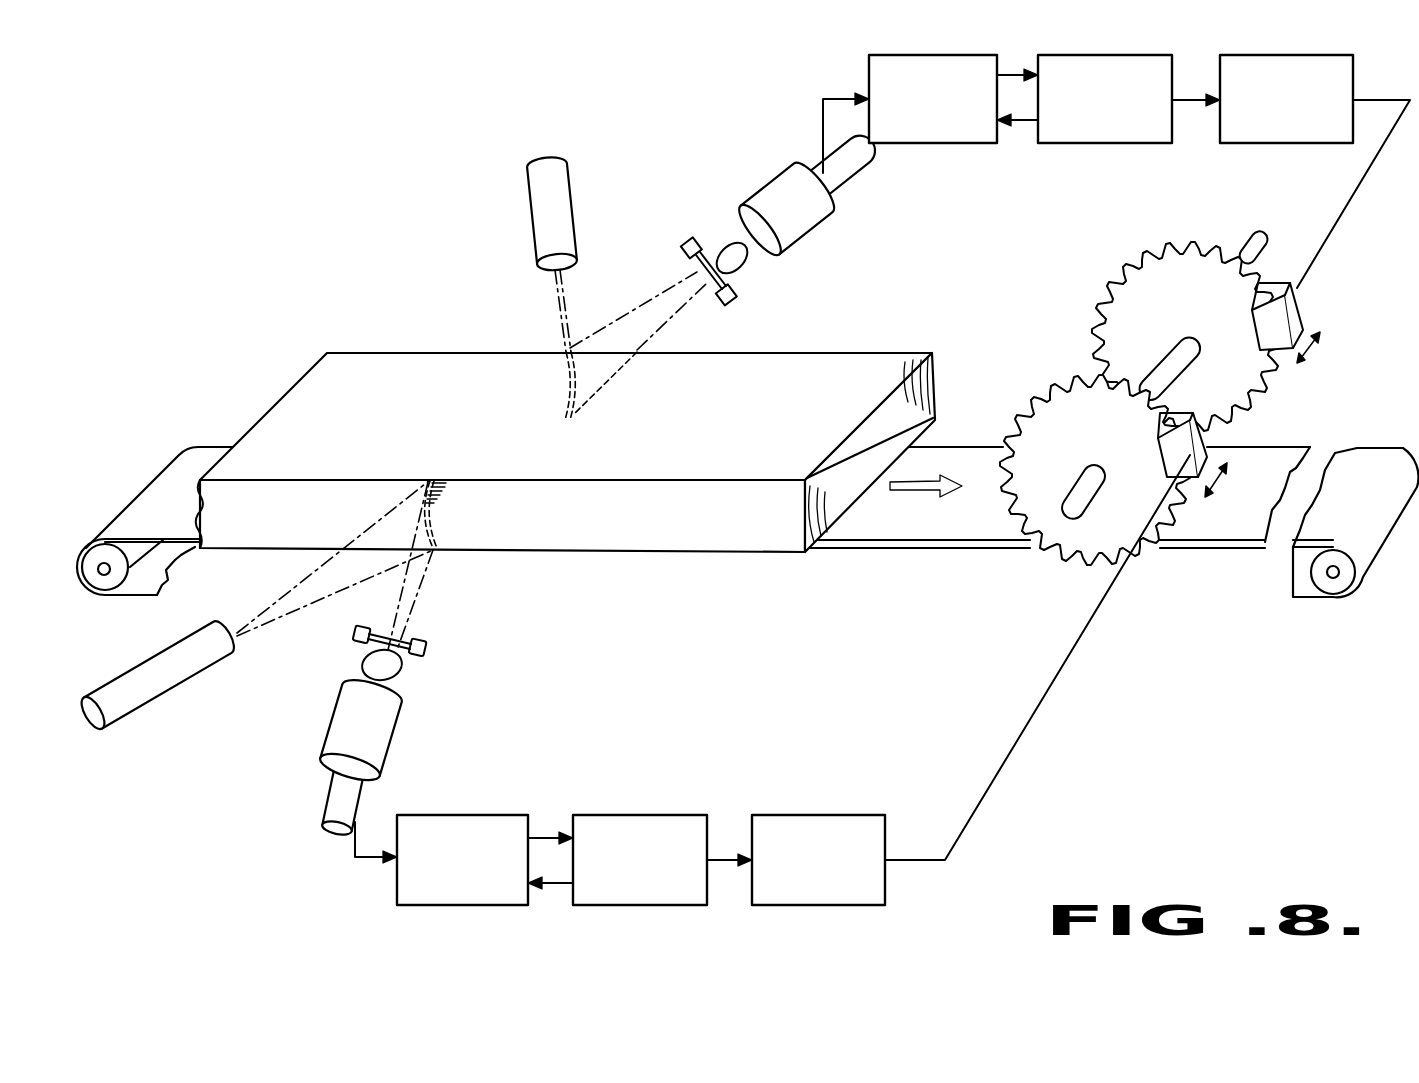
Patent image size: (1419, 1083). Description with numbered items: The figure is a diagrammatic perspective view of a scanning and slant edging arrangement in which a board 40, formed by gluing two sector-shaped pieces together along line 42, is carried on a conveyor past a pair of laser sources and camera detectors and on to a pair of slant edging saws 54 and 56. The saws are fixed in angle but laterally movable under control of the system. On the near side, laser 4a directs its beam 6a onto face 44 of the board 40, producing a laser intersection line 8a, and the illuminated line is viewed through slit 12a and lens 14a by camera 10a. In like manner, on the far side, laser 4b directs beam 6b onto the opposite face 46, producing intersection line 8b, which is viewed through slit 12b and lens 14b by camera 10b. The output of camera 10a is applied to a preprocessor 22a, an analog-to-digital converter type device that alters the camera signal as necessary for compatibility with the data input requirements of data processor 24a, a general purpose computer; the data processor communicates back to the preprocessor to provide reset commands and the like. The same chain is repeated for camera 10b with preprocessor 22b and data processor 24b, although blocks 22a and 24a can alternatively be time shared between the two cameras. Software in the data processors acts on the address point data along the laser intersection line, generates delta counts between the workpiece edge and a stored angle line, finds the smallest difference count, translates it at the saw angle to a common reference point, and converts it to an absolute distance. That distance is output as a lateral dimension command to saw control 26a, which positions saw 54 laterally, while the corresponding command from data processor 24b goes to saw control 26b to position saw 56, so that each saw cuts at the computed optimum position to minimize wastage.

The laser 4a is at (153, 656).
The laser 4b is at (528, 210).
The laser beam 6a is at (272, 593).
The laser beam 6b is at (555, 306).
The laser intersection line 8a is at (428, 530).
The laser intersection line 8b is at (565, 385).
The camera 10a is at (390, 735).
The camera 10b is at (790, 185).
The slit 12a is at (426, 646).
The slit 12b is at (690, 240).
The lens 14a is at (400, 672).
The lens 14b is at (724, 241).
The preprocessor 22a is at (492, 813).
The preprocessor 22b is at (945, 143).
The data processor 24a is at (652, 815).
The data processor 24b is at (1110, 143).
The saw control 26a is at (835, 815).
The saw control 26b is at (1265, 143).
The board 40 is at (775, 353).
The glue line 42 is at (870, 447).
The face 44 is at (668, 550).
The face 46 is at (935, 380).
The slant edging saw 54 is at (1013, 508).
The slant edging saw 56 is at (1142, 316).